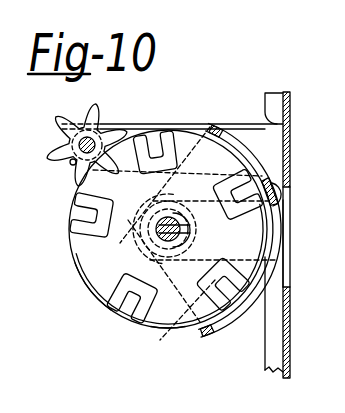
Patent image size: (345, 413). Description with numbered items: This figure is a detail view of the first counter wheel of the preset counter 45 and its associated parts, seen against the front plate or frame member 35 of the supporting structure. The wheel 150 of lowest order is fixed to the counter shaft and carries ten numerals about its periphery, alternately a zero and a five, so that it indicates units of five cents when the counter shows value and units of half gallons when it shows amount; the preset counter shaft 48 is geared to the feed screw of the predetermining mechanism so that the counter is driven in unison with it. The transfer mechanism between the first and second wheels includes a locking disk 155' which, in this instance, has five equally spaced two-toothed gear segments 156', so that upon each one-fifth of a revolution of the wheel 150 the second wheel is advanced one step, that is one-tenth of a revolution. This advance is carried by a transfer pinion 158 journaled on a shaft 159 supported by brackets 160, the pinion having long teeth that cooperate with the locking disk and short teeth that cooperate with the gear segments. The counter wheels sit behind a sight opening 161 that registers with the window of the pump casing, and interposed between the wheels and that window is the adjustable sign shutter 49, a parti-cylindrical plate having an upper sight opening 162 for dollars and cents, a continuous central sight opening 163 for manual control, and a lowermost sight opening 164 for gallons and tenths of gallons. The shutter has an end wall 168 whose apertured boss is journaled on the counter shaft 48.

The front plate or frame member 35 is at (292, 106).
The preset counter 45 is at (172, 129).
The preset counter shaft 48 is at (158, 234).
The adjustable sign shutter 49 is at (216, 126).
The wheel of lowest order 150 is at (70, 262).
The locking disk 155' is at (82, 289).
The two-toothed gear segments 156' is at (120, 308).
The transfer pinion 158 is at (83, 122).
The shaft 159 is at (70, 163).
The brackets 160 is at (128, 123).
The sight opening 161 is at (287, 249).
The upper sight opening 162 is at (231, 142).
The central sight opening 163 is at (288, 213).
The lowermost sight opening 164 is at (230, 325).
The end wall 168 is at (171, 327).